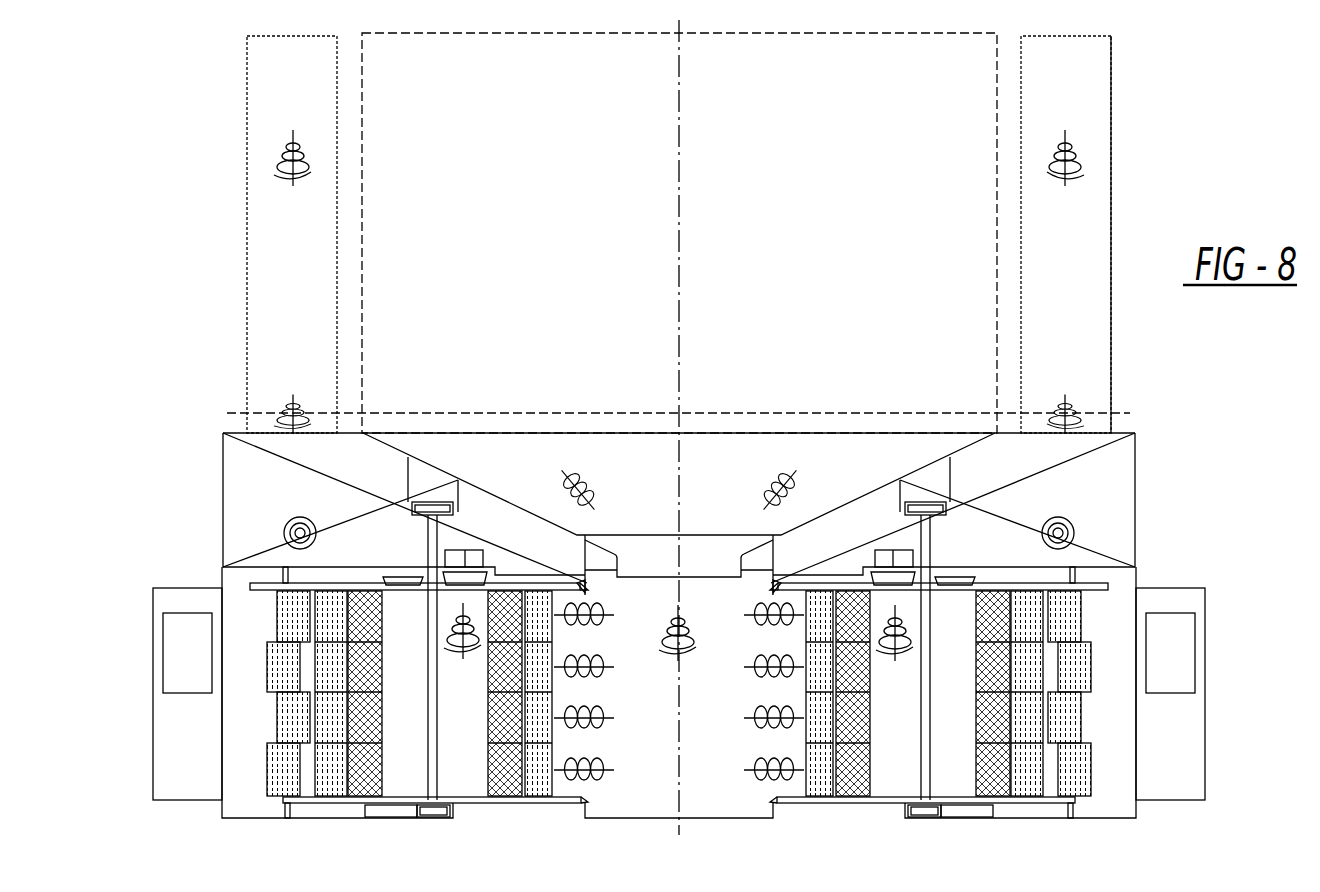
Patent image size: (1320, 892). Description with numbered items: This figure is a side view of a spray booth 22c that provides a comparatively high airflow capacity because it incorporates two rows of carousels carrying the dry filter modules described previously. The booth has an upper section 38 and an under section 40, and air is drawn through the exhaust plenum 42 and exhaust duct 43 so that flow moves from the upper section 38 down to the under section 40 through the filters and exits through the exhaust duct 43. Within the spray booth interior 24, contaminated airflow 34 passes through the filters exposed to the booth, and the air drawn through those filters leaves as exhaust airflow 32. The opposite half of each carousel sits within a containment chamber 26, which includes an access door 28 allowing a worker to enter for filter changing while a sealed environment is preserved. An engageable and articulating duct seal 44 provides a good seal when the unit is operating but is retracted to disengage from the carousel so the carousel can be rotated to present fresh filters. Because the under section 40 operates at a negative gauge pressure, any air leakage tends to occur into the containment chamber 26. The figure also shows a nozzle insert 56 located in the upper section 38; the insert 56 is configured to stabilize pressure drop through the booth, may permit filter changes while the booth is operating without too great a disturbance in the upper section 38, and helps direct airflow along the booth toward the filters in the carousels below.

The spray booth 22c is at (1118, 204).
The spray booth interior 24 is at (726, 699).
The containment chamber 26 is at (247, 802).
The access door 28 is at (182, 755).
The exhaust airflow 32 is at (463, 659).
The contaminated airflow 34 is at (583, 480).
The upper section 38 is at (830, 223).
The under section 40 is at (729, 782).
The exhaust plenum 42 is at (1137, 498).
The exhaust duct 43 is at (1112, 321).
The duct seal 44 is at (480, 562).
The nozzle insert 56 is at (757, 563).